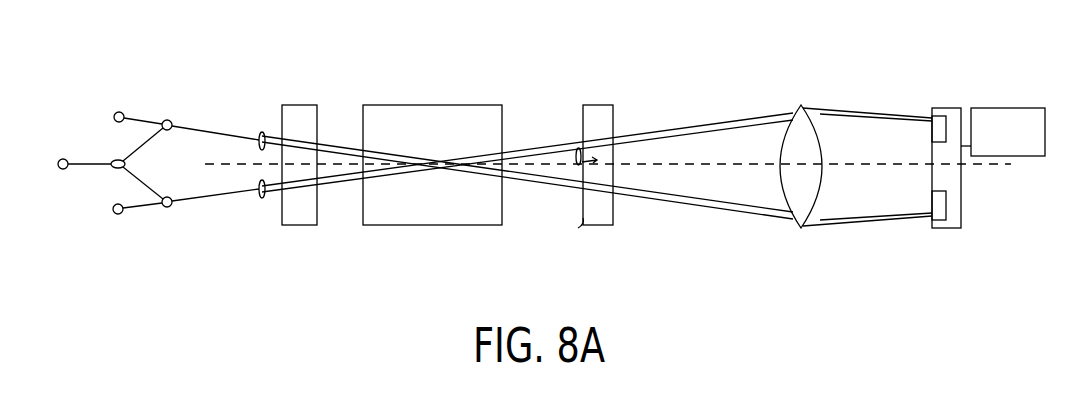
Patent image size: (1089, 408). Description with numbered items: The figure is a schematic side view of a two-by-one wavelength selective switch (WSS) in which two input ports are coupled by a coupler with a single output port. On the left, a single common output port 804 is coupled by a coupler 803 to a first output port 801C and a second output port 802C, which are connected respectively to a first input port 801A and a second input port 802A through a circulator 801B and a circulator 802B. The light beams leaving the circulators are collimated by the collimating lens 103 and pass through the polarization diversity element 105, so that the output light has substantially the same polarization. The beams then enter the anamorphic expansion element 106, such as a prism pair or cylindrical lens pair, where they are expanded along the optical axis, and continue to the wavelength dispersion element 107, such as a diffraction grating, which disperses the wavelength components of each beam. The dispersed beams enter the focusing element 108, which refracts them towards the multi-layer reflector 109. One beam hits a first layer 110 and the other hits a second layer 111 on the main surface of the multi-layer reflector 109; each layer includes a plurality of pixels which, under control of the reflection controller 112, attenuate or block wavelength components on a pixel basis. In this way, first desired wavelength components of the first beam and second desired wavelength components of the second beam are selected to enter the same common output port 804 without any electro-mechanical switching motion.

The collimating lens 103 is at (262, 133).
The polarization diversity element 105 is at (307, 105).
The anamorphic expansion element 106 is at (465, 105).
The wavelength dispersion element 107 is at (603, 105).
The focusing element 108 is at (801, 105).
The multi-layer reflector 109 is at (952, 110).
The first layer 110 is at (938, 117).
The second layer 111 is at (938, 220).
The reflection controller 112 is at (1002, 108).
The first input port 801A is at (119, 112).
The circulator 801B is at (165, 120).
The first output port 801C is at (153, 133).
The second input port 802A is at (118, 214).
The circulator 802B is at (165, 208).
The second output port 802C is at (155, 193).
The coupler 803 is at (115, 169).
The single common output port 804 is at (63, 158).